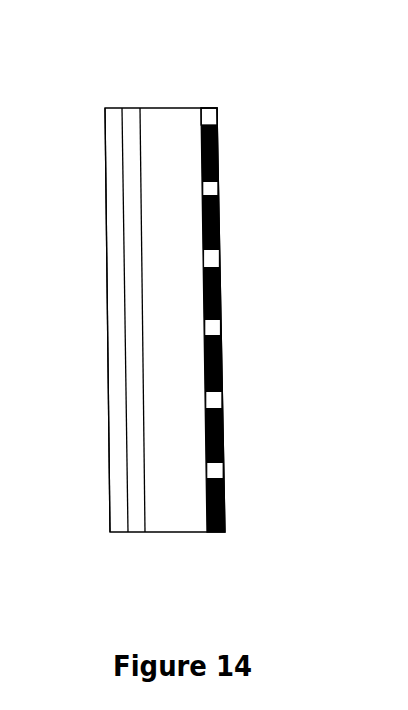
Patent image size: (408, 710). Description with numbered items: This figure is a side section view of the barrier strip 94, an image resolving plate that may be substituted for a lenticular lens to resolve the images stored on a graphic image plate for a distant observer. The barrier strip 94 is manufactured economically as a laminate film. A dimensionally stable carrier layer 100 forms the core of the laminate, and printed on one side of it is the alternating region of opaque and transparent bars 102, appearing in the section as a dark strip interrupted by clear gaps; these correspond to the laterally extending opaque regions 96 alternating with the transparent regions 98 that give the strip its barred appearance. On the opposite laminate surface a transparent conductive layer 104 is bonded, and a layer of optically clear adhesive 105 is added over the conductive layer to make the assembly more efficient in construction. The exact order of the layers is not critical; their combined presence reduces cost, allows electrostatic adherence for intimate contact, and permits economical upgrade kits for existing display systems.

The barrier strip 94 is at (214, 273).
The opaque regions 96 is at (220, 230).
The transparent regions 98 is at (212, 259).
The carrier layer 100 is at (173, 175).
The alternating region of opaque and transparent bars 102 is at (214, 103).
The transparent conductive layer 104 is at (128, 108).
The optically clear adhesive 105 is at (104, 109).